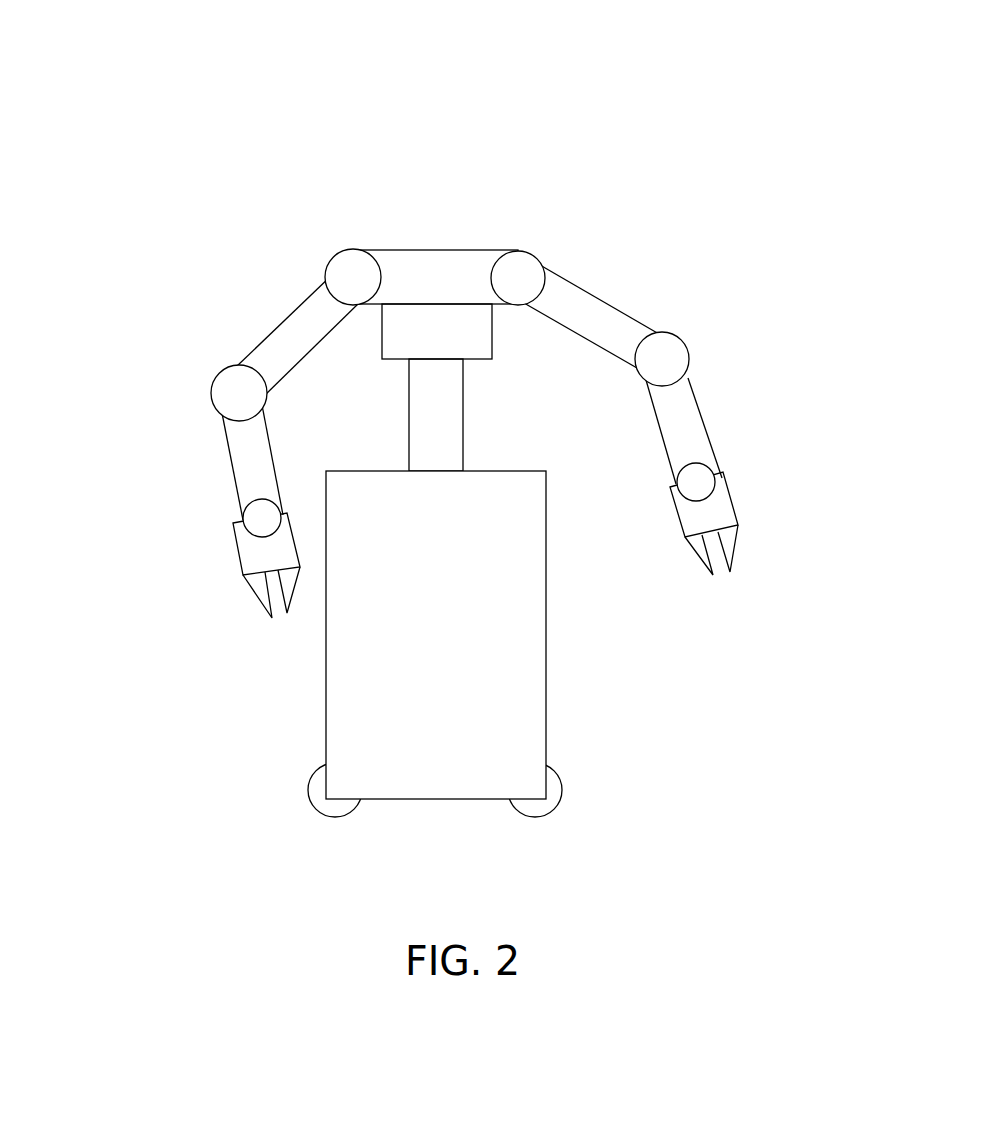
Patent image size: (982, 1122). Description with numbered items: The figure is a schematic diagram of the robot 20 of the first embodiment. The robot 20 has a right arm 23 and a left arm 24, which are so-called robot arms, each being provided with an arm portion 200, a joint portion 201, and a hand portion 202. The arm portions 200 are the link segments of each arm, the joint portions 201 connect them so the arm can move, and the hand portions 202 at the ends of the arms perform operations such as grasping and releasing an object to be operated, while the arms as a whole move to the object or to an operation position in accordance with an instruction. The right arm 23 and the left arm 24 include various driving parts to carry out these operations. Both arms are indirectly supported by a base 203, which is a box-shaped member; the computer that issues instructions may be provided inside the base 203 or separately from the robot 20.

The robot 20 is at (358, 133).
The right arm 23 is at (105, 590).
The left arm 24 is at (822, 497).
The arm portion 200 is at (255, 315).
The joint portion 201 is at (316, 262).
The hand portion 202 is at (215, 574).
The base 203 is at (453, 644).